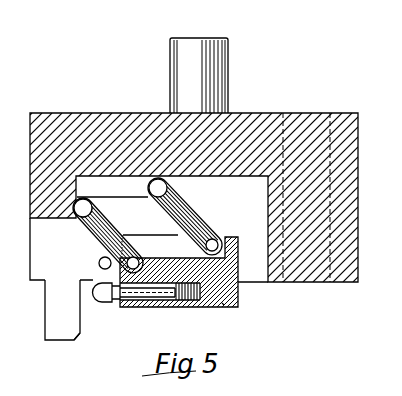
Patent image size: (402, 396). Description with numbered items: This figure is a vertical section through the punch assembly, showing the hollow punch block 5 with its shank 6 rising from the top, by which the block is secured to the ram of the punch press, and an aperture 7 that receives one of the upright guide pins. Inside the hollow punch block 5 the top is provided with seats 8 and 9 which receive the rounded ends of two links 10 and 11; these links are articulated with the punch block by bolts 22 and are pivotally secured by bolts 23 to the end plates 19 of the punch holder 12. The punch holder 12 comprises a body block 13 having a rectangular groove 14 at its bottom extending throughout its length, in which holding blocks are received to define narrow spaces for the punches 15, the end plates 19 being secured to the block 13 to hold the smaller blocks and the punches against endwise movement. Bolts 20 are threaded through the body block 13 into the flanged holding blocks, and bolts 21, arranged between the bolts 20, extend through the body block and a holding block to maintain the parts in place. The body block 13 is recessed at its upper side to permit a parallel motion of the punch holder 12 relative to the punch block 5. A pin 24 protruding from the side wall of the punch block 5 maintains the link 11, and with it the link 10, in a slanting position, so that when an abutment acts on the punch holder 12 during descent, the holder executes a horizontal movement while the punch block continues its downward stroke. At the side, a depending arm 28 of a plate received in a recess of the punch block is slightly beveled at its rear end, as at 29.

The punch block 5 is at (55, 119).
The shank 6 is at (228, 68).
The apertures 7 is at (328, 118).
The seat 8 is at (150, 187).
The seat 9 is at (78, 200).
The link 10 is at (195, 217).
The link 11 is at (99, 237).
The punch holder 12 is at (240, 268).
The block 13 is at (142, 305).
The rectangular groove 14 is at (206, 293).
The punches 15 is at (178, 306).
The end plates 19 is at (148, 241).
The bolts 20 is at (105, 298).
The bolts 21 is at (224, 305).
The bolts 22 is at (78, 214).
The bolts 23 is at (139, 262).
The pin 24 is at (100, 265).
The depending arm 28 is at (47, 313).
The bevel 29 is at (79, 334).